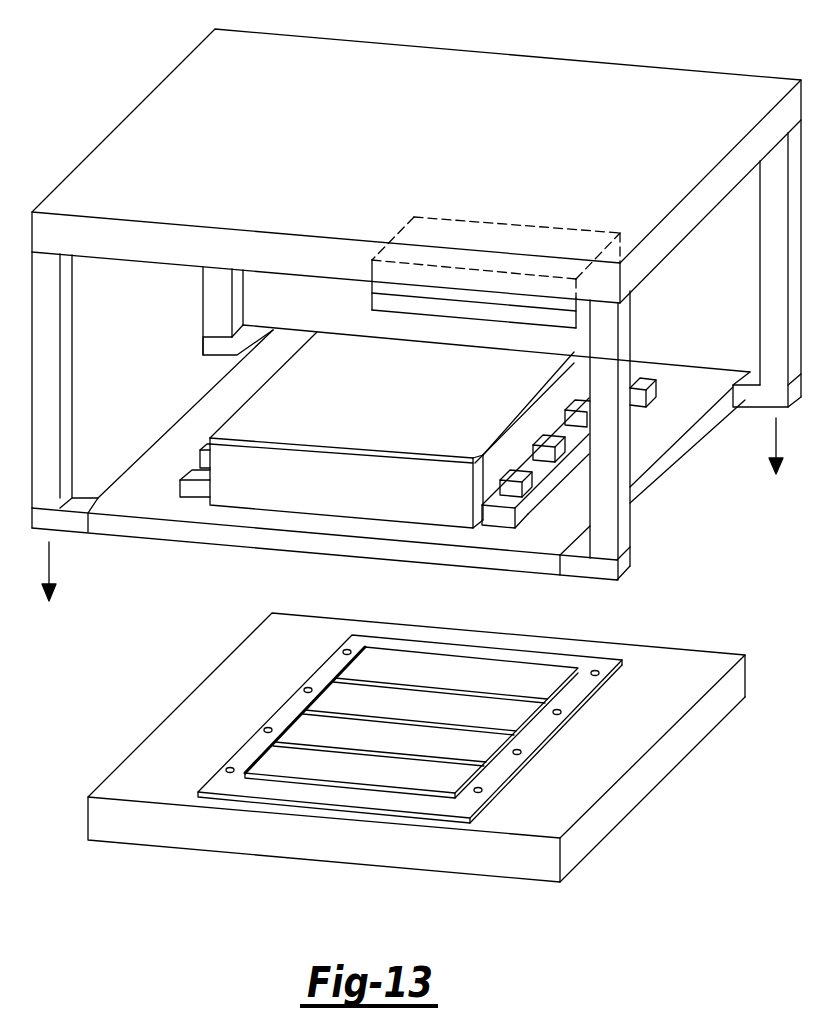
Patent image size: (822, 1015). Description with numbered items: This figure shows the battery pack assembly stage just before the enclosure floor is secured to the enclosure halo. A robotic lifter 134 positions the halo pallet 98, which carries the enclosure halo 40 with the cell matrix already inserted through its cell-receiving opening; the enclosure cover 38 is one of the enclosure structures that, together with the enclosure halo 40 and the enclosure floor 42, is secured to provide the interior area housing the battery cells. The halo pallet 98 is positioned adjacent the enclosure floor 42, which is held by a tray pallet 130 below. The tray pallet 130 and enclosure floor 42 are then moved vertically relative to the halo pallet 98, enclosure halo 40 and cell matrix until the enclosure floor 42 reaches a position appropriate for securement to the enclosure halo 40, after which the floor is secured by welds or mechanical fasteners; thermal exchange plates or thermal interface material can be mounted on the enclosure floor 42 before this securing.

The robotic lifter 134 is at (658, 92).
The enclosure cover 38 is at (347, 352).
The enclosure halo 40 is at (262, 480).
The halo pallet 98 is at (650, 475).
The enclosure floor 42 is at (537, 732).
The tray pallet 130 is at (700, 722).